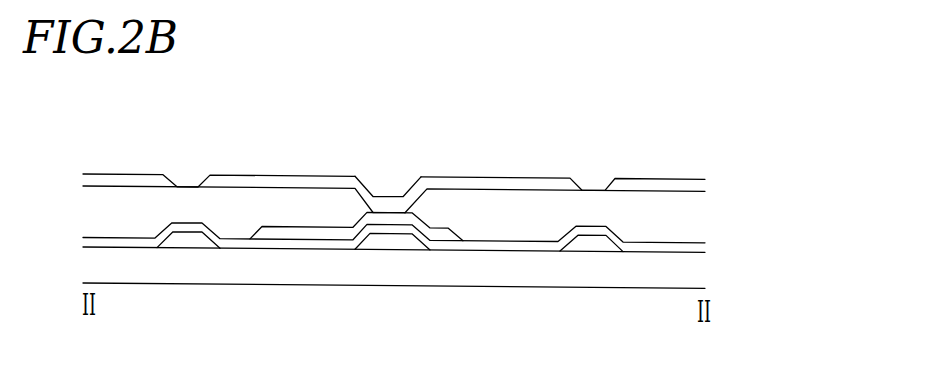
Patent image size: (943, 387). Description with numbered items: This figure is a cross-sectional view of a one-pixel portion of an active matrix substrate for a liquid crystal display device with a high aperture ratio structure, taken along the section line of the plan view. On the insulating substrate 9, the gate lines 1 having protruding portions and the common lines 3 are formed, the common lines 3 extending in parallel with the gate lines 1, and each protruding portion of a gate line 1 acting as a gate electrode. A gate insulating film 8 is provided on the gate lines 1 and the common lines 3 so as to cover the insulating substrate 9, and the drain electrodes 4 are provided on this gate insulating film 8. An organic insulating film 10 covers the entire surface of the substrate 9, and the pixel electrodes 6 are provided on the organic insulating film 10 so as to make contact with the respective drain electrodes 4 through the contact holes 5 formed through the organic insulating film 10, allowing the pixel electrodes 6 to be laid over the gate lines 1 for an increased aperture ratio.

The gate line 1 is at (187, 244).
The common line 3 is at (398, 246).
The drain electrode 4 is at (313, 233).
The contact hole 5 is at (390, 185).
The pixel electrode 6 is at (270, 183).
The gate insulating film 8 is at (537, 249).
The insulating substrate 9 is at (135, 275).
The organic insulating film 10 is at (513, 215).